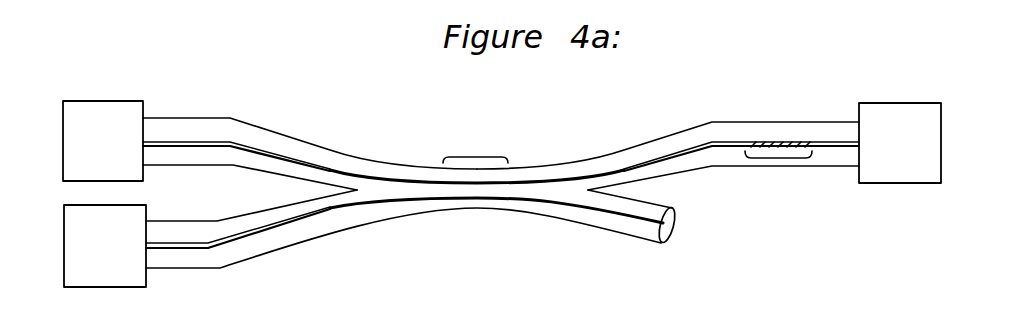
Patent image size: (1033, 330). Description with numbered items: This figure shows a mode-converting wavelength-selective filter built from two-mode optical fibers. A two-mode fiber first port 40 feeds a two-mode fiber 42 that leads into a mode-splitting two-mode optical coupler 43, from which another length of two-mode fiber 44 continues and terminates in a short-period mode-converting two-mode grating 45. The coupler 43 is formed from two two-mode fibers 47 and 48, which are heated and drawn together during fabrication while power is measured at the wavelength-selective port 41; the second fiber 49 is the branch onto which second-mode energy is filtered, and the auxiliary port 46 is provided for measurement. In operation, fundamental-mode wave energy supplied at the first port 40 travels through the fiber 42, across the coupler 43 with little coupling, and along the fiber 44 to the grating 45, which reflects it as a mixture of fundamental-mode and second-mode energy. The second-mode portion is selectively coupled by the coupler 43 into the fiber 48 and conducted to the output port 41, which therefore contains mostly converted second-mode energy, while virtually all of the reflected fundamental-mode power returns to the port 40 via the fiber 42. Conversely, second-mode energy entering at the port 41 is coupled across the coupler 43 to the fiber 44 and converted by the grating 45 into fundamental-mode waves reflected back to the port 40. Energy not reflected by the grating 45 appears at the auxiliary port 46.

The first port 40 is at (130, 92).
The wavelength-selective port 41 is at (128, 296).
The two-mode fiber 42 is at (272, 124).
The mode-splitting two-mode optical coupler 43 is at (477, 157).
The two-mode fiber 44 is at (717, 112).
The short-period mode-converting two-mode grating 45 is at (780, 158).
The auxiliary port 46 is at (874, 92).
The two-mode fiber 47 is at (476, 182).
The two-mode fiber 48 is at (478, 199).
The second fiber 49 is at (268, 258).